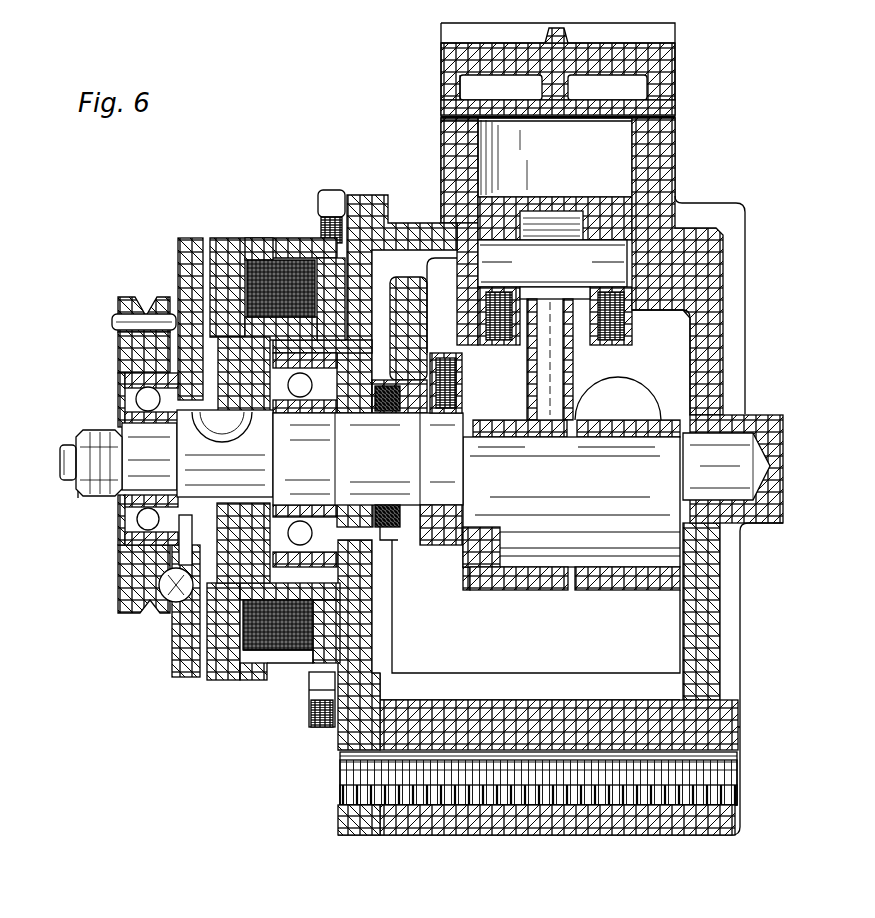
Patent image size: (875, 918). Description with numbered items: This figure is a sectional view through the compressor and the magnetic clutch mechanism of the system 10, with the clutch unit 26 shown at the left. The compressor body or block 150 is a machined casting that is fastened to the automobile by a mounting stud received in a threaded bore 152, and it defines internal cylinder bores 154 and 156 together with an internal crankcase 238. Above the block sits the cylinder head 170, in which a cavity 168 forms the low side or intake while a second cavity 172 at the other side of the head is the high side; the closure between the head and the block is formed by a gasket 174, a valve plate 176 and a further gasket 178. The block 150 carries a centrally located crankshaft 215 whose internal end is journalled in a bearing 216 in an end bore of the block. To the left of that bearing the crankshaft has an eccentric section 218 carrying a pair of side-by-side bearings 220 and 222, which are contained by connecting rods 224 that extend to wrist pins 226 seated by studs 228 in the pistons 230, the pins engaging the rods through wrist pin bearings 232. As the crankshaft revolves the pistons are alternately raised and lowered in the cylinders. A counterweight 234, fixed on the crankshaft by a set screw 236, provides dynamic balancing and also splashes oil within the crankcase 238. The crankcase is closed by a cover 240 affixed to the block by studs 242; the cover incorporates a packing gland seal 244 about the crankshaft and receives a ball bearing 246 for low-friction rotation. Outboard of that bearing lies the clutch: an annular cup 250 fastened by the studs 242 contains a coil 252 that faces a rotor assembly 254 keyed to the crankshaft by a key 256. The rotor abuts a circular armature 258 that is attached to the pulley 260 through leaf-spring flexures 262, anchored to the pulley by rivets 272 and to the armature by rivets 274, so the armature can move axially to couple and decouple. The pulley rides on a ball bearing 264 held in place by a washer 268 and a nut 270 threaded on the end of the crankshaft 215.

The motor assembly 10 is at (750, 200).
The clutch brake assembly 26 is at (242, 692).
The body or block 150 is at (706, 300).
The threaded bore 152 is at (722, 784).
The cylinder bore 154 is at (488, 166).
The cylinder bore 156 is at (612, 393).
The cavity 168 is at (626, 95).
The cylinder head 170 is at (660, 74).
The cavity 172 is at (460, 82).
The gasket 174 is at (682, 105).
The valve plate 176 is at (680, 117).
The gasket 178 is at (676, 121).
The crankshaft 215 is at (747, 465).
The bearing 216 is at (742, 428).
The eccentric section 218 is at (466, 582).
The bearing 220 is at (520, 589).
The bearing 222 is at (607, 589).
The connecting rod 224 is at (551, 414).
The wrist pin 226 is at (552, 263).
The stud 228 is at (498, 346).
The piston 230 is at (526, 208).
The wrist pin bearing 232 is at (578, 205).
The counterweight 234 is at (470, 532).
The set screw 236 is at (450, 420).
The crankcase 238 is at (530, 620).
The cover 240 is at (379, 200).
The stud 242 is at (331, 190).
The packing gland seal 244 is at (388, 541).
The ball bearing 246 is at (336, 491).
The annular cup 250 is at (291, 258).
The coil 252 is at (259, 240).
The rotor assembly 254 is at (226, 238).
The key 256 is at (216, 460).
The circular armature 258 is at (189, 238).
The pulley 260 is at (130, 297).
The flexures or leaf-spring fasteners 262 is at (118, 347).
The ball bearing 264 is at (149, 456).
The washer 268 is at (74, 452).
The nut 270 is at (96, 428).
The rivet 272 is at (112, 321).
The rivet 274 is at (170, 612).